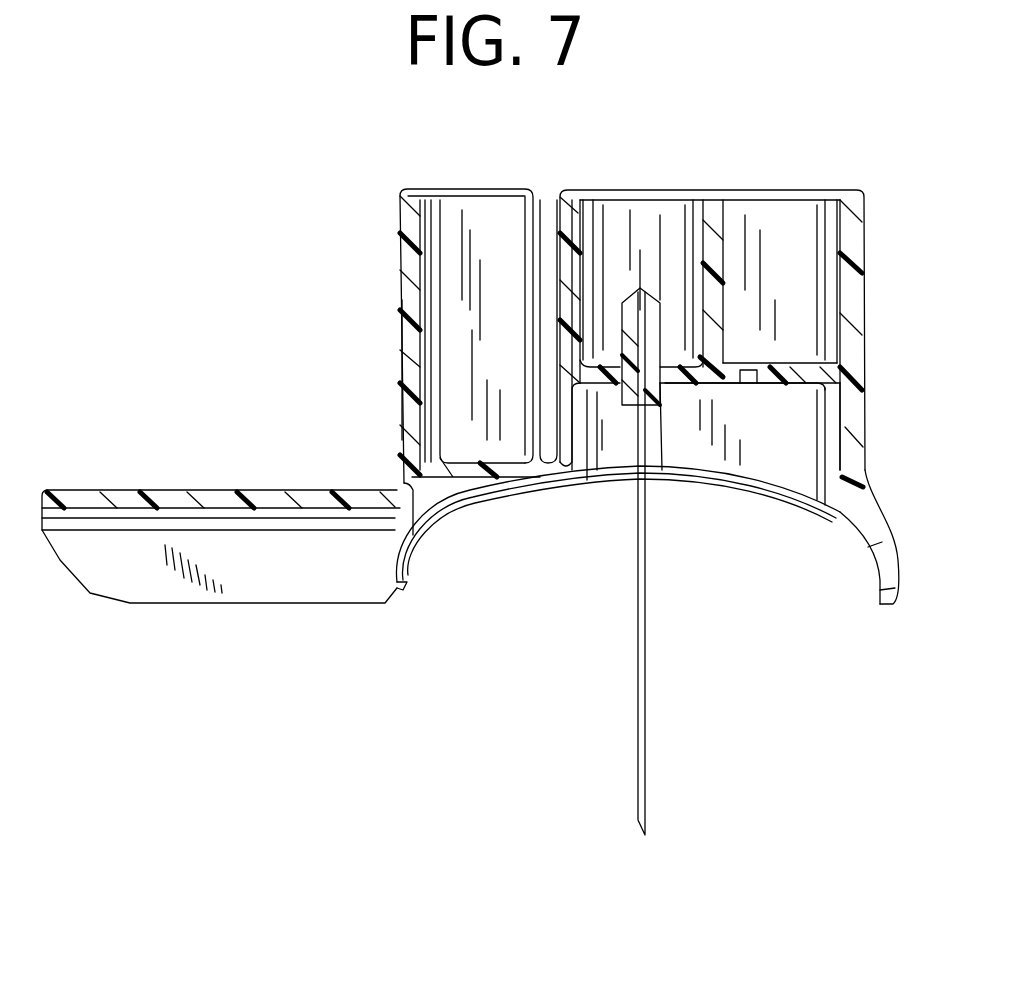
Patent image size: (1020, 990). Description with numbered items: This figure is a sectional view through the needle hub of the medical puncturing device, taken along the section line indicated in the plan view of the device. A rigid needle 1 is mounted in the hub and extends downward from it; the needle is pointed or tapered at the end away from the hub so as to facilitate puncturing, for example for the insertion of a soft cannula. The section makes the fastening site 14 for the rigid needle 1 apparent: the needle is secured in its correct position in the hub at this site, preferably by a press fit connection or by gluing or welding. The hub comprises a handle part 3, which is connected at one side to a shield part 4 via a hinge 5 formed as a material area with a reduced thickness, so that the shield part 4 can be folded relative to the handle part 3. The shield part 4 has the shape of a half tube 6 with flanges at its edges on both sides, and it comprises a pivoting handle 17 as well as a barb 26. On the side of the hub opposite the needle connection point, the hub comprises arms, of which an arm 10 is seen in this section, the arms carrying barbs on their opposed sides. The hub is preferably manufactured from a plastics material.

The rigid needle 1 is at (637, 740).
The handle part 3 is at (846, 357).
The shield part 4 is at (406, 292).
The hinge 5 is at (563, 473).
The half tube 6 is at (207, 545).
The arm 10 is at (890, 572).
The fastening site 14 is at (653, 328).
The pivoting handle 17 is at (406, 372).
The barb 26 is at (399, 585).